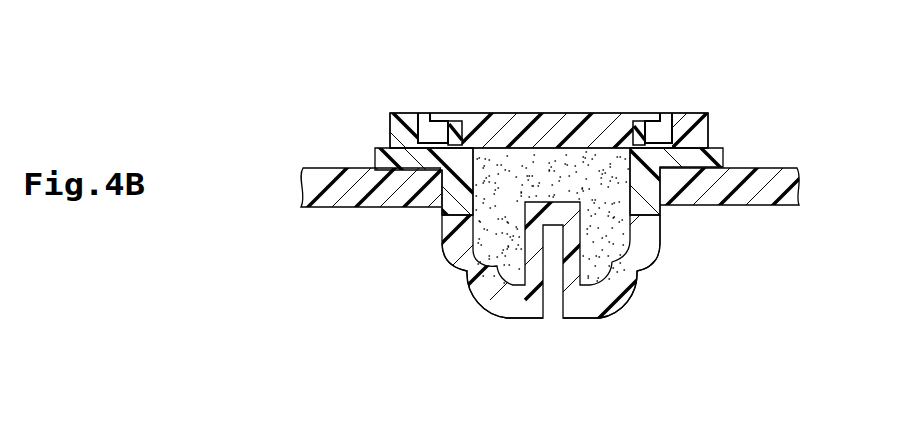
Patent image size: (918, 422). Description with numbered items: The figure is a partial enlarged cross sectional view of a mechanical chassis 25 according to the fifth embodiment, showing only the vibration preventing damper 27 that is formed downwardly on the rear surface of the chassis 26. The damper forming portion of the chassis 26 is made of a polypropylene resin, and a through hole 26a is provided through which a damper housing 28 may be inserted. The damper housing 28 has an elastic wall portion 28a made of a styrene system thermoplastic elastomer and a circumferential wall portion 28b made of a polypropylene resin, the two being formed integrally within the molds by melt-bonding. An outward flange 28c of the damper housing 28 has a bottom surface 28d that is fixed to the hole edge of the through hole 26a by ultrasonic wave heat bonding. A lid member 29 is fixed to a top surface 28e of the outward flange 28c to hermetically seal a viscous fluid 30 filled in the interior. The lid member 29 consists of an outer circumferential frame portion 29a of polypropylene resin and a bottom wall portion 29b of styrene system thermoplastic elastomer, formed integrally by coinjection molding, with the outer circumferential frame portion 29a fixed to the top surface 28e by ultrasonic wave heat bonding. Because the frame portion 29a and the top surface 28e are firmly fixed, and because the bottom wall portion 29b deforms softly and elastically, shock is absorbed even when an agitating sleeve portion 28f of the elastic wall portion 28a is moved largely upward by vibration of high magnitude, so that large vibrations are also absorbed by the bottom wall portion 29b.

The mechanical chassis 25 is at (736, 210).
The chassis 26 is at (309, 168).
The through hole 26a is at (662, 243).
The vibration preventing damper 27 is at (404, 98).
The damper housing 28 is at (595, 218).
The elastic wall portion 28a is at (478, 300).
The circumferential wall portion 28b is at (440, 212).
The outward flange 28c is at (374, 148).
The bottom surface 28d is at (688, 205).
The top surface 28e is at (715, 148).
The agitating sleeve portion 28f is at (600, 312).
The lid member 29 is at (542, 110).
The outer circumferential frame portion 29a is at (697, 113).
The bottom wall portion 29b is at (473, 113).
The viscous fluid 30 is at (590, 166).